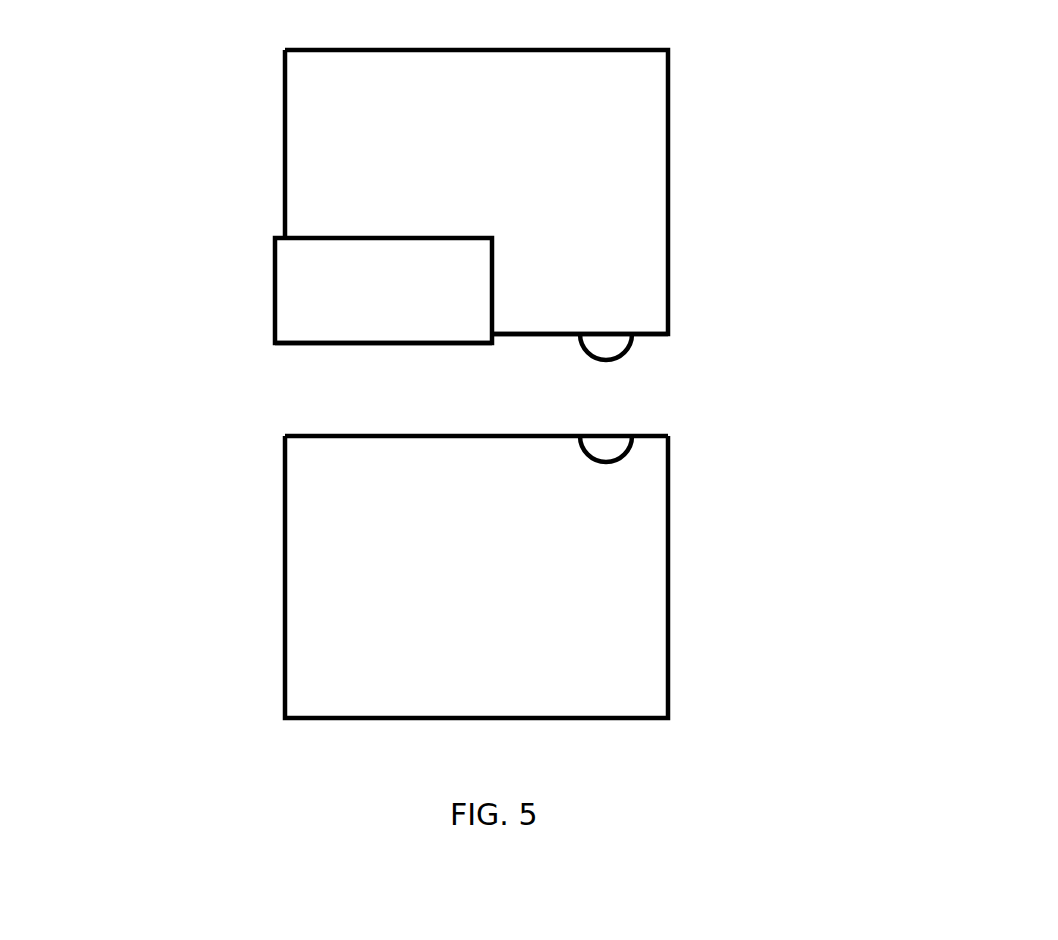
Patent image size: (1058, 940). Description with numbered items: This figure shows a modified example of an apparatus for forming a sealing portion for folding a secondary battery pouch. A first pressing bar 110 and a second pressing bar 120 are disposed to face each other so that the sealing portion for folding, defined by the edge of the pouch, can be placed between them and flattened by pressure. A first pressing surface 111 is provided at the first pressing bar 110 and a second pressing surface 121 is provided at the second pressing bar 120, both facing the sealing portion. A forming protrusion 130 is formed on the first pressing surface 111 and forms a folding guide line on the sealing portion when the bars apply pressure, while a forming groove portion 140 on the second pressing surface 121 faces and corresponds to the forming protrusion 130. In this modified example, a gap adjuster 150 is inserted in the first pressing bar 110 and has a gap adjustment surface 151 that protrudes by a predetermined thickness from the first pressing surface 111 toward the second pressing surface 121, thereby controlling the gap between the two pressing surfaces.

The first pressing bar 110 is at (610, 180).
The first pressing surface 111 is at (517, 337).
The second pressing bar 120 is at (612, 620).
The second pressing surface 121 is at (520, 436).
The forming protrusion 130 is at (627, 352).
The forming groove portion 140 is at (620, 455).
The gap adjuster 150 is at (323, 288).
The gap adjustment surface 151 is at (327, 350).